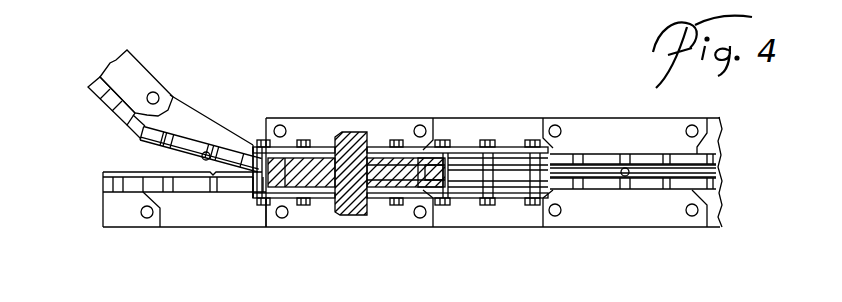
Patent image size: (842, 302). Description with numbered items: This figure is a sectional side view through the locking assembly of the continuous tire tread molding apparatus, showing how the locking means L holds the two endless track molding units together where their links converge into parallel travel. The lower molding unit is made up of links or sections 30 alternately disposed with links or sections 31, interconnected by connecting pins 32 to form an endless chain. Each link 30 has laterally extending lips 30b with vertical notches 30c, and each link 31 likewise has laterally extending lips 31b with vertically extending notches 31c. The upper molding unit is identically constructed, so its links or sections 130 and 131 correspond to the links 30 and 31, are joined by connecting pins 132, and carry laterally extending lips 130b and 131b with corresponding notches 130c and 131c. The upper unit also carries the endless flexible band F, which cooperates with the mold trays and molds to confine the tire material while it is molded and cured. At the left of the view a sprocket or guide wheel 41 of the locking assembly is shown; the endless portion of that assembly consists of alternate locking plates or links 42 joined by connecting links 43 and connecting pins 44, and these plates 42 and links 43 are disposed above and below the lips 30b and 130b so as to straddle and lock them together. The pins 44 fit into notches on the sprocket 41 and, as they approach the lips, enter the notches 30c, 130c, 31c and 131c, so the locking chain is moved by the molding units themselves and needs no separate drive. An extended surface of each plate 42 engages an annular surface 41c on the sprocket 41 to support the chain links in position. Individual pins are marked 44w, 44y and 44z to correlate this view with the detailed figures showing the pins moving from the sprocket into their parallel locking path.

The links or sections 30 is at (203, 218).
The laterally extending lips 30b is at (190, 190).
The vertical notches 30c is at (173, 180).
The links or sections 31 is at (115, 203).
The laterally extending lips 31b is at (110, 185).
The vertically extending notches 31c is at (123, 183).
The connecting pins 32 is at (147, 218).
The sprocket or guide wheel 41 is at (327, 176).
The annular surface 41c is at (256, 140).
The locking plates or links 42 is at (505, 160).
The connecting links 43 is at (462, 140).
The connecting pins 44 is at (498, 155).
The connecting pin 44w is at (302, 140).
The connecting pin 44y is at (393, 140).
The connecting pin 44z is at (466, 185).
The links or sections 130 is at (243, 120).
The laterally extending lips 130b is at (193, 137).
The notches 130c is at (166, 124).
The links or sections 131 is at (140, 62).
The laterally extending lips 131b is at (100, 80).
The notches 131c is at (107, 116).
The connecting pins 132 is at (155, 89).
The endless flexible band F is at (135, 127).
The locking means L is at (347, 132).